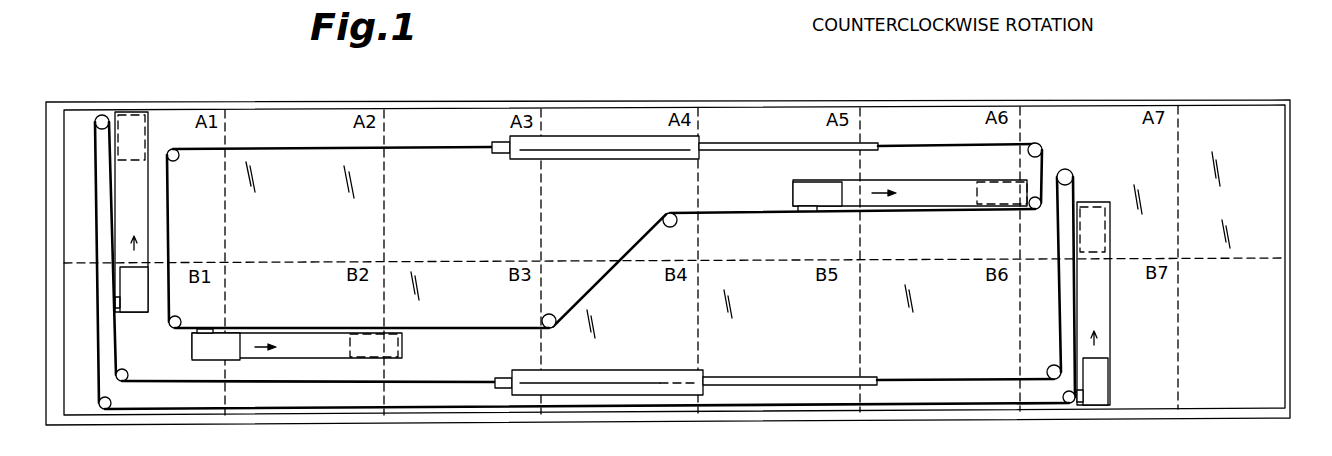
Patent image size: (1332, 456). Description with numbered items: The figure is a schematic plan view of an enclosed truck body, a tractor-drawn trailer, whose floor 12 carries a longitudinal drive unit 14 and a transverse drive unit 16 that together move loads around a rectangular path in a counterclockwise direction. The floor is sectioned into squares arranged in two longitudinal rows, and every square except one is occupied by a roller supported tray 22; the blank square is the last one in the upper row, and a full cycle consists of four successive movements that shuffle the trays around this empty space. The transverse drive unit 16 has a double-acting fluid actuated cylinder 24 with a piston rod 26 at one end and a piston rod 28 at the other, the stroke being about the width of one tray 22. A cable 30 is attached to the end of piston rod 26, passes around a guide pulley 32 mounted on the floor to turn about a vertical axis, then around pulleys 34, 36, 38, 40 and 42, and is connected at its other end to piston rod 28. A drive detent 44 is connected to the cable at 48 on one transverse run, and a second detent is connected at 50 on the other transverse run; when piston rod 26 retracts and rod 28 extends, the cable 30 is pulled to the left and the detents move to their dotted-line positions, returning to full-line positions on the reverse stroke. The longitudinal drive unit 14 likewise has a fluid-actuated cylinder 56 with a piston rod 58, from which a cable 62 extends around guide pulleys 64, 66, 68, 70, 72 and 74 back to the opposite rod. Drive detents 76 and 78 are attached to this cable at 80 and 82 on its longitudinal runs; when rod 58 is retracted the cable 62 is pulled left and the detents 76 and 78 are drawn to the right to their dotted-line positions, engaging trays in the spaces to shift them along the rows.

The floor 12 is at (1287, 292).
The longitudinal drive unit 14 is at (595, 166).
The transverse drive unit 16 is at (607, 391).
The roller supported tray 22 is at (214, 224).
The fluid actuated cylinder 24 is at (628, 396).
The piston rod 26 is at (815, 378).
The piston rod 28 is at (500, 378).
The cable 30 is at (956, 378).
The guide pulley 32 is at (1053, 364).
The pulley 34 is at (1073, 178).
The pulley 36 is at (1067, 404).
The pulley 38 is at (111, 404).
The pulley 40 is at (104, 115).
The pulley 42 is at (128, 376).
The drive detent 44 is at (1100, 377).
The cable connection point 48 is at (1085, 398).
The cable connection point 50 is at (118, 305).
The fluid-actuated cylinder 56 is at (600, 160).
The piston rod 58 is at (784, 144).
The cable 62 is at (940, 144).
The guide pulley 64 is at (1042, 149).
The guide pulley 66 is at (1036, 210).
The guide pulley 68 is at (664, 236).
The guide pulley 70 is at (544, 316).
The guide pulley 72 is at (180, 317).
The guide pulley 74 is at (177, 162).
The drive detent 76 is at (815, 192).
The drive detent 78 is at (236, 350).
The cable attachment point 80 is at (805, 212).
The cable attachment point 82 is at (215, 330).